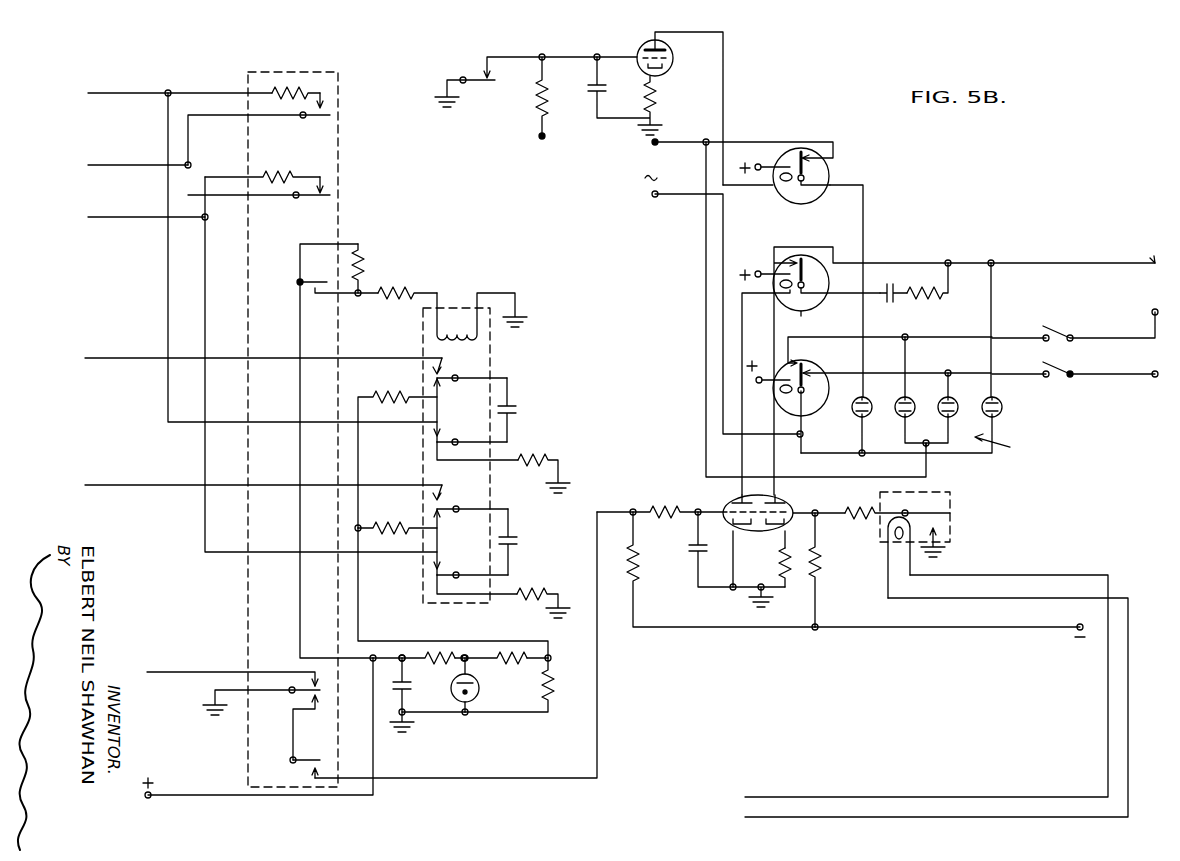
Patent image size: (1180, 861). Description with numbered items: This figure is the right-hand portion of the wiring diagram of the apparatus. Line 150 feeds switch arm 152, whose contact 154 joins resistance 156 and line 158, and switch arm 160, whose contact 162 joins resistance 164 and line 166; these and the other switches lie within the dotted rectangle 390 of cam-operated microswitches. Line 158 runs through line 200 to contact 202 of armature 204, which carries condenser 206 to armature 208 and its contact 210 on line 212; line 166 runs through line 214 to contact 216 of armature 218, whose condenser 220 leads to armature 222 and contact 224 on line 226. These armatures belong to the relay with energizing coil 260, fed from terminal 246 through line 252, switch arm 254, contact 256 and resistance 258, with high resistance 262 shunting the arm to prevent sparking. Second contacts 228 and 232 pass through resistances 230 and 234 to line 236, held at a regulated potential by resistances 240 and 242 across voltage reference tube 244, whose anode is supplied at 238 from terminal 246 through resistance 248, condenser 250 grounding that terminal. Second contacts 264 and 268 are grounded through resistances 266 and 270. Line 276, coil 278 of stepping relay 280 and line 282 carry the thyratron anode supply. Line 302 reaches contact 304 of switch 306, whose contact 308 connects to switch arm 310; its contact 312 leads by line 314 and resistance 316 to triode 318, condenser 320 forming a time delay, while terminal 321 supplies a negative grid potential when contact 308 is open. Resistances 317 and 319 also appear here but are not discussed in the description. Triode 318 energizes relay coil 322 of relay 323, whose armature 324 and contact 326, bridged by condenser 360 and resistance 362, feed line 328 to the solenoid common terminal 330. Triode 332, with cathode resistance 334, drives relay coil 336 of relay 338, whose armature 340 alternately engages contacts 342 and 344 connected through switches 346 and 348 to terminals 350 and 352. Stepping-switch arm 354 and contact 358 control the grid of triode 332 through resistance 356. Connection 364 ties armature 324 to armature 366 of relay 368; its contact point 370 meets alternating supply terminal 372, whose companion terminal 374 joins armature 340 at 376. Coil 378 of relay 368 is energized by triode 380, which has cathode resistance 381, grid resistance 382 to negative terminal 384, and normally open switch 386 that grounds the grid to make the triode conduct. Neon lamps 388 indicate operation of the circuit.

The line 150 is at (100, 165).
The switch arm 152 is at (305, 119).
The contact 154 is at (325, 108).
The resistance 156 is at (285, 93).
The line 158 is at (103, 93).
The switch arm 160 is at (300, 199).
The contact 162 is at (325, 190).
The resistance 164 is at (280, 176).
The line 166 is at (100, 217).
The line 200 is at (166, 322).
The contact 202 is at (459, 422).
The armature 204 is at (472, 450).
The condenser 206 is at (509, 406).
The armature 208 is at (470, 388).
The contact 210 is at (456, 362).
The line 212 is at (109, 358).
The line 214 is at (205, 308).
The contact 216 is at (458, 555).
The armature 218 is at (472, 583).
The condenser 220 is at (510, 536).
The armature 222 is at (471, 520).
The contact 224 is at (457, 487).
The line 226 is at (116, 485).
The second contact 228 is at (456, 455).
The resistance 230 is at (396, 397).
The second contact 232 is at (443, 542).
The resistance 234 is at (394, 527).
The line 236 is at (415, 641).
The positive terminal 238 is at (549, 656).
The resistance 240 is at (505, 656).
The resistance 242 is at (550, 688).
The voltage reference tube 244 is at (470, 713).
The positive potential supply terminal 246 is at (150, 800).
The resistance 248 is at (407, 685).
The condenser 250 is at (404, 713).
The line 252 is at (298, 622).
The switch arm 254 is at (310, 278).
The contact 256 is at (318, 293).
The resistance 258 is at (396, 293).
The relay coil 260 is at (458, 330).
The resistance 262 is at (360, 264).
The second contact 264 is at (435, 448).
The resistance 266 is at (529, 460).
The second contact 268 is at (433, 580).
The resistance 270 is at (536, 594).
The line 276 is at (768, 797).
The coil 278 is at (887, 535).
The stepping relay 280 is at (950, 505).
The line 282 is at (808, 817).
The line 302 is at (178, 672).
The contact 304 is at (318, 687).
The switch 306 is at (293, 698).
The contact 308 is at (317, 704).
The switch arm 310 is at (301, 759).
The contact 312 is at (315, 769).
The line 314 is at (446, 781).
The resistance 316 is at (668, 510).
The resistor 317 is at (638, 582).
The triode 318 is at (727, 502).
The resistor 319 is at (818, 568).
The condenser 320 is at (696, 550).
The terminal 321 is at (1080, 627).
The relay coil 322 is at (784, 319).
The relay 323 is at (808, 310).
The relay armature 324 is at (824, 286).
The contact 326 is at (804, 258).
The line 328 is at (1060, 263).
The terminal 330 is at (1155, 263).
The triode 332 is at (793, 506).
The resistance 334 is at (782, 560).
The relay coil 336 is at (806, 401).
The relay 338 is at (830, 390).
The armature 340 is at (789, 365).
The contact 342 is at (800, 364).
The contact 344 is at (810, 371).
The switch 346 is at (1052, 332).
The switch 348 is at (1053, 371).
The terminal 350 is at (1153, 312).
The terminal 352 is at (1153, 374).
The arm 354 is at (925, 513).
The resistance 356 is at (860, 510).
The contact 358 is at (935, 527).
The condenser 360 is at (890, 306).
The resistance 362 is at (930, 304).
The connection 364 is at (863, 226).
The armature 366 is at (806, 163).
The relay 368 is at (828, 180).
The contact point 370 is at (803, 150).
The alternating supply terminal 372 is at (653, 143).
The terminal 374 is at (653, 196).
The connection 376 is at (722, 395).
The coil 378 is at (773, 190).
The triode 380 is at (673, 60).
The resistance 381 is at (655, 108).
The resistance 382 is at (527, 98).
The negative supply terminal 384 is at (542, 139).
The switch 386 is at (468, 92).
The neon lamps 388 is at (928, 362).
The dotted rectangle 390 is at (338, 141).